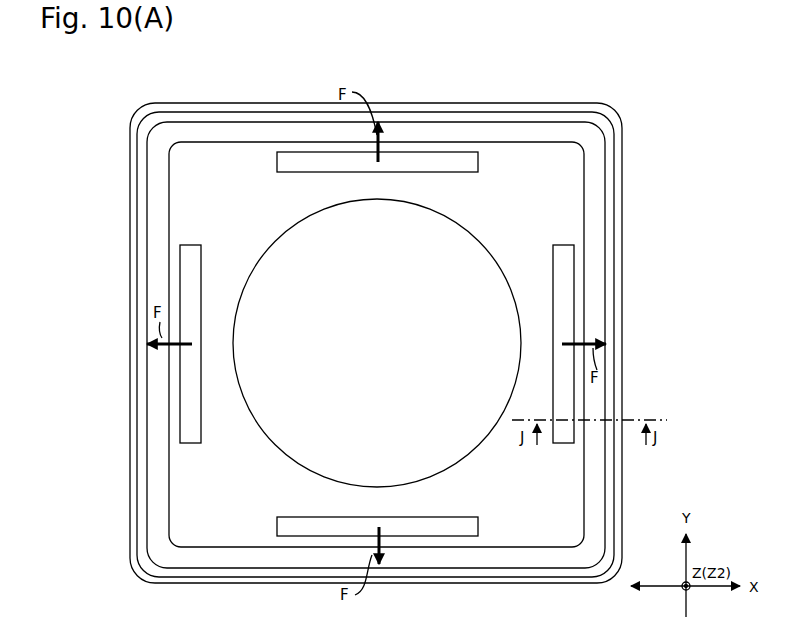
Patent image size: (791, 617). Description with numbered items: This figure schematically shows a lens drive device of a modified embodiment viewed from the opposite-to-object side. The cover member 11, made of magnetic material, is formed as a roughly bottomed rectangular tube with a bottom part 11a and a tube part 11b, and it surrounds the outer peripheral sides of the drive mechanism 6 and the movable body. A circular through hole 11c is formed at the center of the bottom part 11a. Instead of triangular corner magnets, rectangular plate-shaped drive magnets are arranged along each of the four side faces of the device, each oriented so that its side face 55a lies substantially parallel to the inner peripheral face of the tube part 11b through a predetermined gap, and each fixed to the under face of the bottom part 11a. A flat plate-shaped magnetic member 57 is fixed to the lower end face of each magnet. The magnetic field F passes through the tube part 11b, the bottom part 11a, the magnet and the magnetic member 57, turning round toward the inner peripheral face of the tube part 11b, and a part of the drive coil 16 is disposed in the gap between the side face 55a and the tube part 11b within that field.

The drive mechanism 6 is at (632, 306).
The cover member 11 is at (375, 321).
The tube part 11b is at (414, 103).
The bottom part 11a is at (554, 205).
The circular through hole 11c is at (236, 372).
The drive coil 16 is at (286, 122).
The side face 55a is at (377, 344).
The magnetic member 57 is at (447, 163).